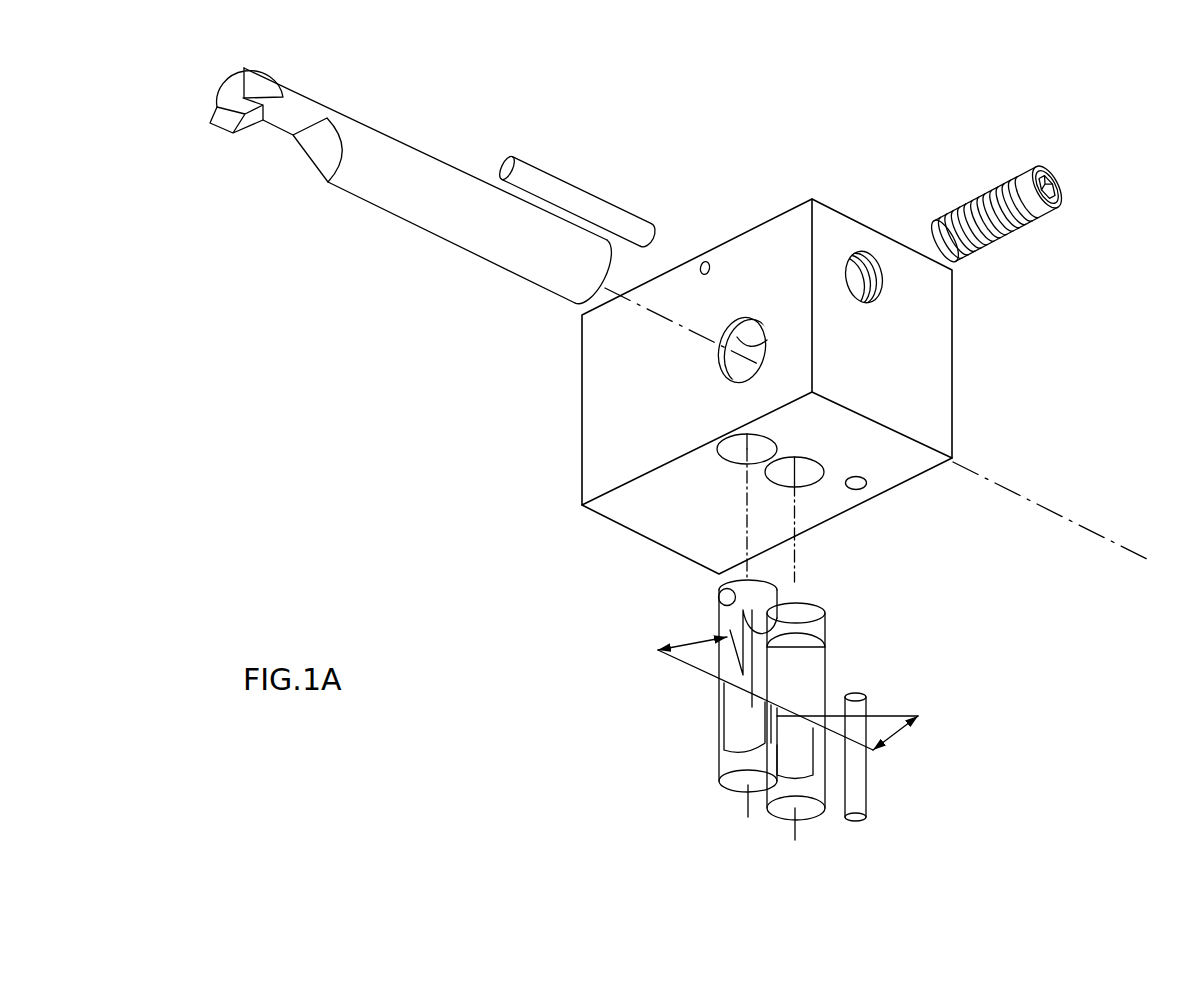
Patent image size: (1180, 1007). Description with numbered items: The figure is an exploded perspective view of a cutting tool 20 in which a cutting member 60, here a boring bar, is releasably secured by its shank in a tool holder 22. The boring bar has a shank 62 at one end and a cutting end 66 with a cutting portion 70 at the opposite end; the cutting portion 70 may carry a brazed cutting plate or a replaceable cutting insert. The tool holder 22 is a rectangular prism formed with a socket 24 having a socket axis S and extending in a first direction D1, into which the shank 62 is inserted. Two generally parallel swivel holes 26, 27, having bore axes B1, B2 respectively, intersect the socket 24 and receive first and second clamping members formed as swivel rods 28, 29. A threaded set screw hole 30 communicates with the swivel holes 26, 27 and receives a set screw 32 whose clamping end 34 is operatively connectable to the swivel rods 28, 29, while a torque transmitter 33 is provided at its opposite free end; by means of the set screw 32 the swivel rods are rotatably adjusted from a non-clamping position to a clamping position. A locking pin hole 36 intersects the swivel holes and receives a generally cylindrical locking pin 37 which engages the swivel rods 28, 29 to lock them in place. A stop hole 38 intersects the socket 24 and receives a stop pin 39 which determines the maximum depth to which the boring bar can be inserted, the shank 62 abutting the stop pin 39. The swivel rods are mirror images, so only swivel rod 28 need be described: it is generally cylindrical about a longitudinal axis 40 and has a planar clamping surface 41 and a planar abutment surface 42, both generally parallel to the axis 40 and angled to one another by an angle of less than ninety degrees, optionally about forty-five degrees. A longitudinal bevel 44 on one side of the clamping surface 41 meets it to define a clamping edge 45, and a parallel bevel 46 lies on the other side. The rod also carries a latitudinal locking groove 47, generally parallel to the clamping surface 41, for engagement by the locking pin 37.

The cutting tool 20 is at (826, 162).
The tool holder 22 is at (657, 364).
The socket 24 is at (730, 362).
The swivel hole 26 is at (733, 452).
The swivel hole 27 is at (858, 484).
The swivel rod 28 is at (735, 790).
The swivel rod 29 is at (808, 815).
The set screw hole 30 is at (865, 275).
The set screw 32 is at (1045, 234).
The torque transmitter 33 is at (1066, 166).
The clamping end 34 is at (952, 265).
The locking pin hole 36 is at (700, 270).
The locking pin 37 is at (574, 192).
The stop hole 38 is at (955, 466).
The stop pin 39 is at (860, 797).
The longitudinal axis 40 is at (795, 817).
The clamping surface 41 is at (745, 703).
The abutment surface 42 is at (742, 608).
The bevel 44 is at (727, 735).
The clamping edge 45 is at (735, 717).
The bevel 46 is at (790, 727).
The locking groove 47 is at (720, 605).
The cutting member 60 is at (406, 108).
The shank 62 is at (501, 238).
The cutting end 66 is at (285, 118).
The cutting portion 70 is at (232, 124).
The bore axis B1 is at (747, 522).
The bore axis B2 is at (797, 512).
The socket axis S is at (1160, 565).
The first direction D1 is at (1160, 588).